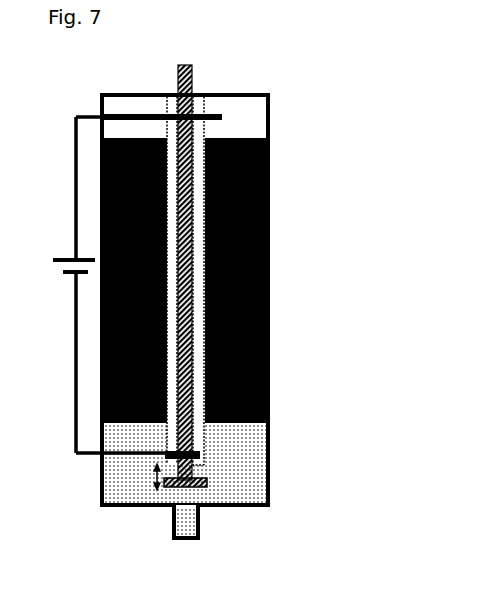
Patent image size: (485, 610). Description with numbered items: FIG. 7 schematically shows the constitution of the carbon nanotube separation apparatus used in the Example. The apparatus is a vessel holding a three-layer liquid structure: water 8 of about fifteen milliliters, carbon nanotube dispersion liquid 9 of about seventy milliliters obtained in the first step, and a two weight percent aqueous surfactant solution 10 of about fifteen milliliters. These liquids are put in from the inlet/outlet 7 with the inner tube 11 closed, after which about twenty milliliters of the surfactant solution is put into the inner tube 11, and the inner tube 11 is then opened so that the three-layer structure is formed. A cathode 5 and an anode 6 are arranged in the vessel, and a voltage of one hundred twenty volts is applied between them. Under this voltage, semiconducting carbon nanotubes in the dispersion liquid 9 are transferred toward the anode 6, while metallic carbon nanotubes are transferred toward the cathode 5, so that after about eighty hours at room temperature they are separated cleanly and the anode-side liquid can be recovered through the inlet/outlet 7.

The cathode 5 is at (227, 108).
The anode 6 is at (211, 474).
The inlet/outlet 7 is at (183, 544).
The water 8 is at (290, 93).
The carbon nanotube dispersion liquid 9 is at (290, 143).
The surfactant solution 10 is at (290, 429).
The inner tube 11 is at (213, 435).